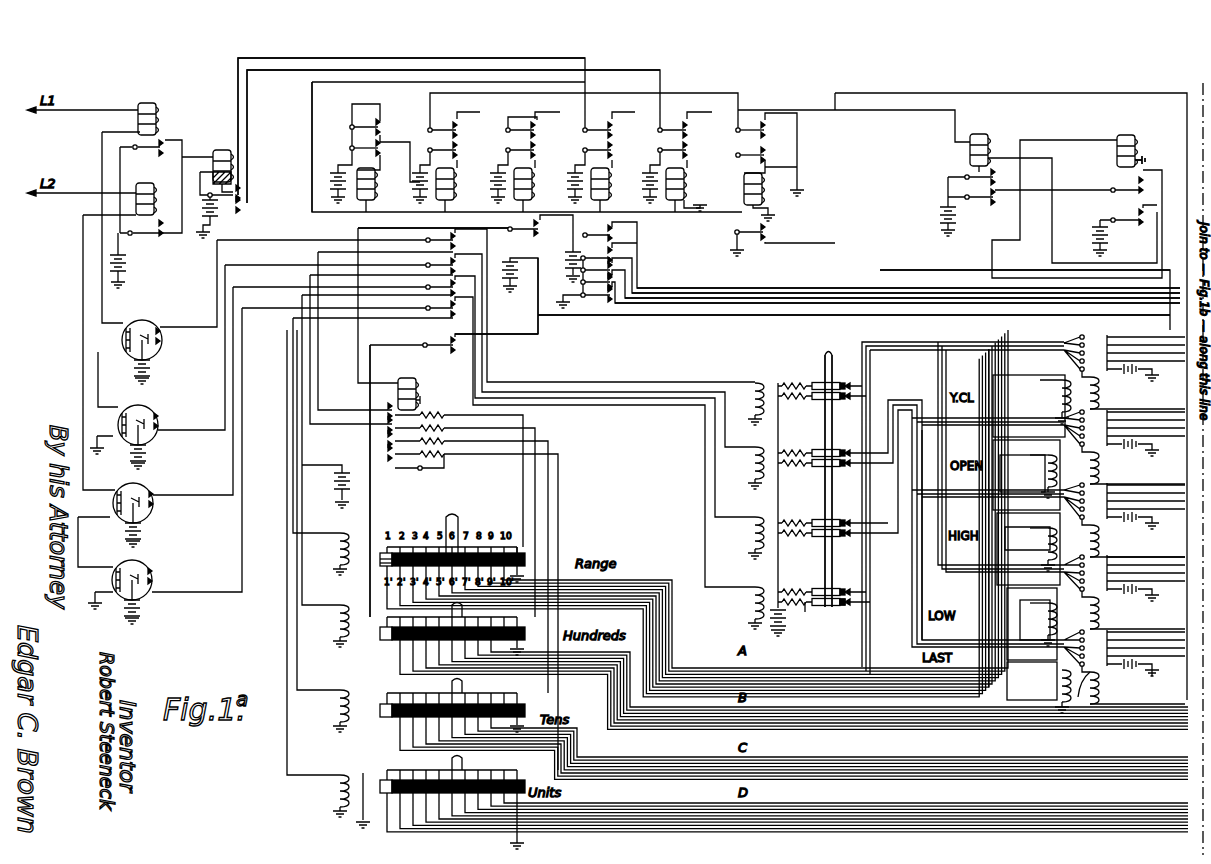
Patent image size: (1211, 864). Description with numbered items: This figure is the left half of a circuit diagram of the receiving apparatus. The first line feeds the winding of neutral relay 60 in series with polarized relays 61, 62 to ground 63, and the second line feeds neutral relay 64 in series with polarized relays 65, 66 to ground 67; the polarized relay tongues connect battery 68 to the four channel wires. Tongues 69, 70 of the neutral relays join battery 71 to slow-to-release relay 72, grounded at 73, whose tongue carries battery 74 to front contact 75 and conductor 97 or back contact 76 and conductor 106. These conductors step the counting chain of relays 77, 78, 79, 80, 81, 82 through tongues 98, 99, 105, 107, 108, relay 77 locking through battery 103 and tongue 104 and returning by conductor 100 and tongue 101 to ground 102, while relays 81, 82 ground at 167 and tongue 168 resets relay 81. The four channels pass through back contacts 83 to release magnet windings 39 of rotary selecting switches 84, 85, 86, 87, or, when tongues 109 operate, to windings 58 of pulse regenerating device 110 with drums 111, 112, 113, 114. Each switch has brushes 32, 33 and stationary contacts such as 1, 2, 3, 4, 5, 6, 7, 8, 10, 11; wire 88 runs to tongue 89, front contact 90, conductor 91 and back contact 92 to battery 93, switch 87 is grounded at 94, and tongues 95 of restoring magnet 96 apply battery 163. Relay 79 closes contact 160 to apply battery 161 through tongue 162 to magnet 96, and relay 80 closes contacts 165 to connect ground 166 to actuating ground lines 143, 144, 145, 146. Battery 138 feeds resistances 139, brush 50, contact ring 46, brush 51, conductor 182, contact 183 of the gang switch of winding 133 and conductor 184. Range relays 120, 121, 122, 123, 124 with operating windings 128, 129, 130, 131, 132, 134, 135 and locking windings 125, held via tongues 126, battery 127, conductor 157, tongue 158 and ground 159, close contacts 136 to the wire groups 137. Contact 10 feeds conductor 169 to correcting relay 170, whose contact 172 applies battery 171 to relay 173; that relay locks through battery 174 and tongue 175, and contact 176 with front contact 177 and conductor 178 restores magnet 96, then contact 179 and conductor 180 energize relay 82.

The neutral relay 60 is at (152, 108).
The neutral relay 64 is at (166, 188).
The contact tongue 69 is at (137, 150).
The contact tongue 70 is at (130, 236).
The battery 71 is at (126, 267).
The slow-to-release relay 72 is at (217, 150).
The ground 73 is at (198, 238).
The grounded battery 74 is at (218, 208).
The front contact 75 is at (250, 189).
The back contact 76 is at (252, 206).
The conductor 97 is at (237, 92).
The conductor 106 is at (247, 116).
The conductor 100 is at (312, 148).
The battery 103 is at (330, 182).
The contact tongue 104 is at (358, 144).
The tongue 105 is at (366, 112).
The relay 77 is at (375, 181).
The relay tongue 99 is at (452, 130).
The relay 78 is at (444, 185).
The switch tongue 108 is at (534, 126).
The relay 79 is at (522, 185).
The relay tongue 98 is at (611, 126).
The relay 80 is at (598, 185).
The switch tongue 107 is at (672, 124).
The relay 81 is at (673, 185).
The relay tongue 101 is at (744, 125).
The contact tongue 168 is at (750, 149).
The relay 82 is at (763, 189).
The ground 102 is at (806, 200).
The ground 167 is at (696, 214).
The tongue 158 is at (750, 226).
The ground 159 is at (743, 254).
The conductor 157 is at (1033, 92).
The relay 173 is at (988, 139).
The contact tongue 175 is at (965, 175).
The contact 176 is at (983, 206).
The battery 174 is at (940, 215).
The correcting relay 170 is at (1138, 138).
The front contact 177 is at (1158, 157).
The contact 179 is at (1148, 187).
The contact 172 is at (1127, 211).
The battery 171 is at (1107, 238).
The conductor 180 is at (902, 270).
The conductor 178 is at (856, 315).
The contact tongues 109 is at (435, 237).
The back contacts 83 is at (452, 275).
The contact 160 is at (538, 234).
The battery 161 is at (563, 267).
The switch tongue 162 is at (611, 228).
The contacts 165 is at (617, 253).
The ground 166 is at (571, 303).
The battery 93 is at (518, 277).
The back contact 92 is at (548, 296).
The tongue 89 is at (430, 352).
The front contact 90 is at (461, 349).
The conductor 91 is at (521, 338).
The restoring magnet 96 is at (417, 390).
The actuating ground line 143 is at (660, 283).
The actuating ground line 144 is at (695, 293).
The actuating ground line 145 is at (729, 298).
The actuating ground line 146 is at (765, 303).
The polarized relay 61 is at (155, 325).
The polarized relay 62 is at (156, 412).
The ground 63 is at (106, 447).
The polarized relay 65 is at (152, 498).
The polarized relay 66 is at (152, 573).
The ground 67 is at (93, 615).
The battery 68 is at (149, 492).
The wire 88 is at (370, 499).
The tongues 95 is at (414, 467).
The battery 163 is at (333, 478).
The release magnet windings 39 is at (338, 626).
The range rotary selecting switch 84 is at (420, 539).
The rotating brush 32 is at (378, 554).
The rotating brush 33 is at (378, 563).
The stationary contact 11 is at (544, 557).
The conductor 169 is at (649, 581).
The rotary selecting switch 85 is at (378, 644).
The rotary selecting switch 86 is at (380, 715).
The rotary selecting switch 87 is at (376, 771).
The ground 94 is at (360, 820).
The release magnet windings 58 is at (754, 393).
The resistances 139 is at (786, 485).
The pulse regenerating device 110 is at (824, 380).
The pulse regenerating drum 111 is at (815, 403).
The pulse regenerating drum 112 is at (815, 470).
The pulse regenerating drum 113 is at (815, 540).
The pulse regenerating drum 114 is at (815, 610).
The battery 138 is at (768, 627).
The brush 50 is at (780, 634).
The contact ring 46 is at (828, 610).
The brush 51 is at (845, 605).
The conductor 182 is at (905, 613).
The stationary contact 10 is at (998, 506).
The contacts 136 is at (1102, 339).
The wire groups 137 is at (1155, 346).
The contact tongues 126 is at (1074, 360).
The grounded battery 127 is at (1140, 373).
The range selecting relay 120 is at (1100, 390).
The operating winding 128 is at (1062, 394).
The stationary contact 8 is at (1029, 406).
The locking winding 125 is at (1100, 412).
The range selecting relay 121 is at (1133, 461).
The stationary contact 7 is at (1026, 467).
The stationary contact 6 is at (1022, 473).
The operating winding 130 is at (1036, 471).
The operating winding 129 is at (1046, 487).
The stationary contact 5 is at (1028, 548).
The stationary contact 3 is at (1027, 538).
The operating winding 132 is at (1037, 544).
The operating winding 131 is at (1048, 567).
The range selecting relay 122 is at (1124, 520).
The stationary contact 2 is at (1032, 623).
The stationary contact 4 is at (1035, 620).
The operating winding 134 is at (1046, 618).
The operating winding 133 is at (1056, 618).
The range selecting relay 123 is at (1124, 592).
The stationary contact 1 is at (1032, 681).
The operating winding 135 is at (1062, 686).
The range selecting relay 124 is at (1124, 667).
The contact 183 is at (1083, 680).
The conductor 184 is at (1161, 673).